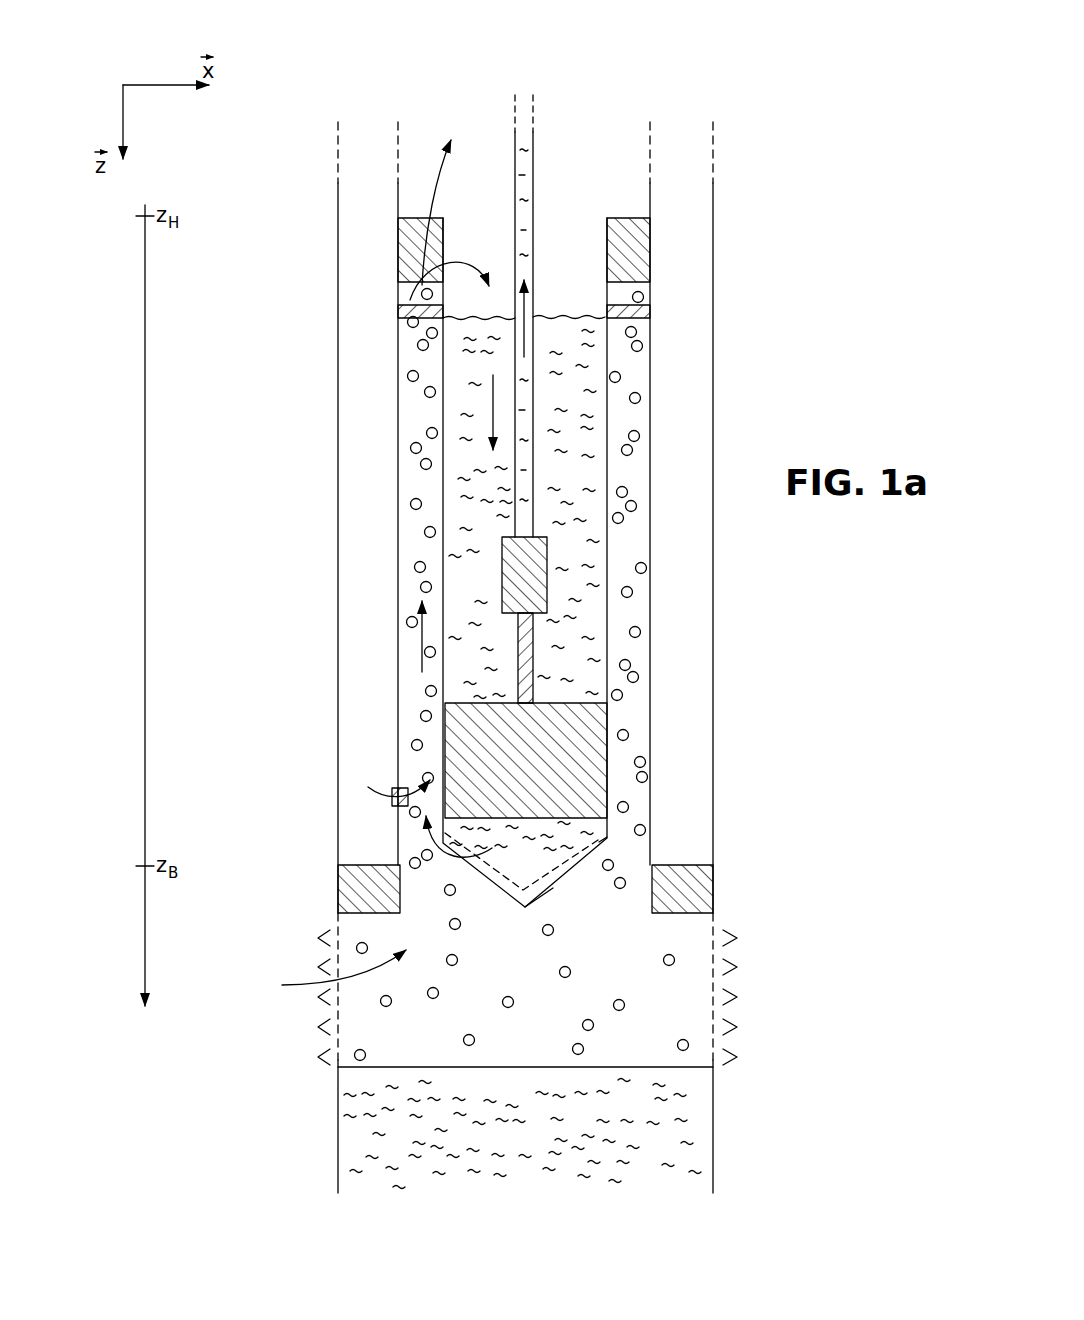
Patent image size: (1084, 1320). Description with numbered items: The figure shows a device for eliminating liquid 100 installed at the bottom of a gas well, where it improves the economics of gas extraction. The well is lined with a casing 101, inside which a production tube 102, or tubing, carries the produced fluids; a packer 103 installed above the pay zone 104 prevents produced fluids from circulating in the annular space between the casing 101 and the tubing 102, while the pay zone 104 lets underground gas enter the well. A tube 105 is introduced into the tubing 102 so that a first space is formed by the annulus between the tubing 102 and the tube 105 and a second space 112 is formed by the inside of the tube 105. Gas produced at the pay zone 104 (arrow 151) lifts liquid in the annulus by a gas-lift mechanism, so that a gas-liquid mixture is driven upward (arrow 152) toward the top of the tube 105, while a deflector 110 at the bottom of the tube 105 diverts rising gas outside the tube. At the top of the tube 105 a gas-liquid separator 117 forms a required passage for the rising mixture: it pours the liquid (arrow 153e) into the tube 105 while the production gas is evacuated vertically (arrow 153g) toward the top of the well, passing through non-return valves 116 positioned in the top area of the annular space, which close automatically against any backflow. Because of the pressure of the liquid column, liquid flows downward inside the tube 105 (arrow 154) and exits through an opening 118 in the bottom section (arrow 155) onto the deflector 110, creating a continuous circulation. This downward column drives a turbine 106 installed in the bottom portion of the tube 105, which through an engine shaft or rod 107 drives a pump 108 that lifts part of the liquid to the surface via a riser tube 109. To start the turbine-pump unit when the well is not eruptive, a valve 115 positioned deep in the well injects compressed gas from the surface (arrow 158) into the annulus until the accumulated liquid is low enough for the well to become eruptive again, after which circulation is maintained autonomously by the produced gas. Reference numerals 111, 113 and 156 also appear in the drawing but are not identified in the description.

The device for eliminating liquid 100 is at (328, 115).
The well casing 101 is at (713, 313).
The production tube 102 is at (651, 373).
The packer 103 is at (686, 900).
The pay zone 104 is at (762, 1035).
The tube 105 is at (610, 643).
The turbine 106 is at (578, 762).
The engine shaft 107 is at (527, 672).
The pump 108 is at (537, 573).
The riser tube 109 is at (527, 506).
The deflector 110 is at (553, 888).
The upper region 111 is at (581, 153).
The second space 112 is at (586, 412).
The gas bubbles 113 is at (646, 448).
The valve 115 is at (398, 804).
The non-return valves 116 is at (648, 305).
The gas-liquid separator 117 is at (632, 238).
The opening 118 is at (599, 842).
The gas production flow 151 is at (293, 987).
The upward mixture flow 152 is at (420, 638).
The gas evacuation flow 153g is at (435, 196).
The liquid pouring flow 153e is at (440, 301).
The downward liquid flow 154 is at (493, 400).
The liquid circulation through opening 155 is at (433, 836).
The capillary flow 156 is at (520, 325).
The compressed gas injection 158 is at (392, 795).